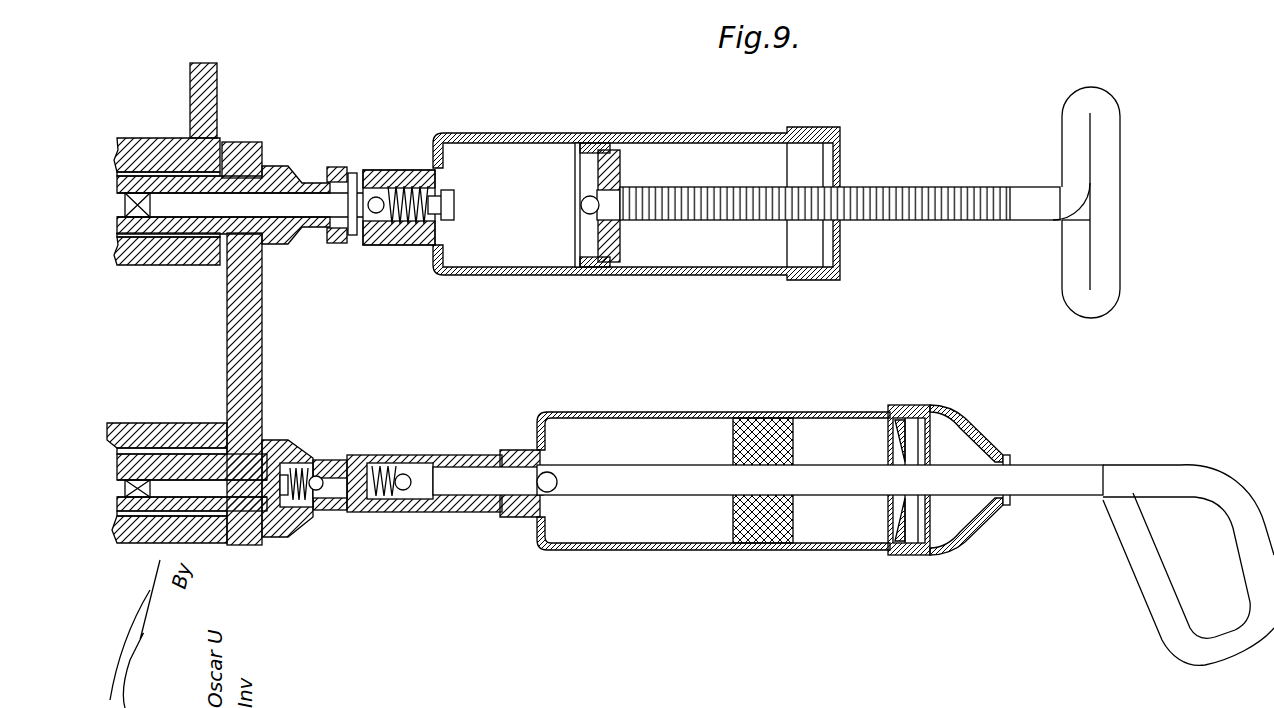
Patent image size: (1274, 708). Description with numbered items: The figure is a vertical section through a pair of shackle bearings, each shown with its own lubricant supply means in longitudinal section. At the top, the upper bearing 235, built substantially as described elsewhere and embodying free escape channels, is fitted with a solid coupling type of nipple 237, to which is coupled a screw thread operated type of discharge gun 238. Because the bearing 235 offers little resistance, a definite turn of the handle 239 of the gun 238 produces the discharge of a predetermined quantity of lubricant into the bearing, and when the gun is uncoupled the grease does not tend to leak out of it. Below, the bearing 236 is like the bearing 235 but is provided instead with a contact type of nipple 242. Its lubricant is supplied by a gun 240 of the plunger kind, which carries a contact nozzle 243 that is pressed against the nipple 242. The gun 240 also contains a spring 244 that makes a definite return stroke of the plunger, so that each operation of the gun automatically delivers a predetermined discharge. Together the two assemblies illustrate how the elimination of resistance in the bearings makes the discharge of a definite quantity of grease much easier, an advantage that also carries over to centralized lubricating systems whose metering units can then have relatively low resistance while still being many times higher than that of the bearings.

The upper bearing 235 is at (222, 137).
The bearing 236 is at (278, 540).
The solid coupling type of nipple 237 is at (317, 180).
The screw thread operated type of discharge gun 238 is at (545, 133).
The handle 239 is at (1112, 185).
The gun 240 is at (905, 528).
The contact type of nipple 242 is at (318, 460).
The contact nozzle 243 is at (395, 513).
The spring 244 is at (897, 442).